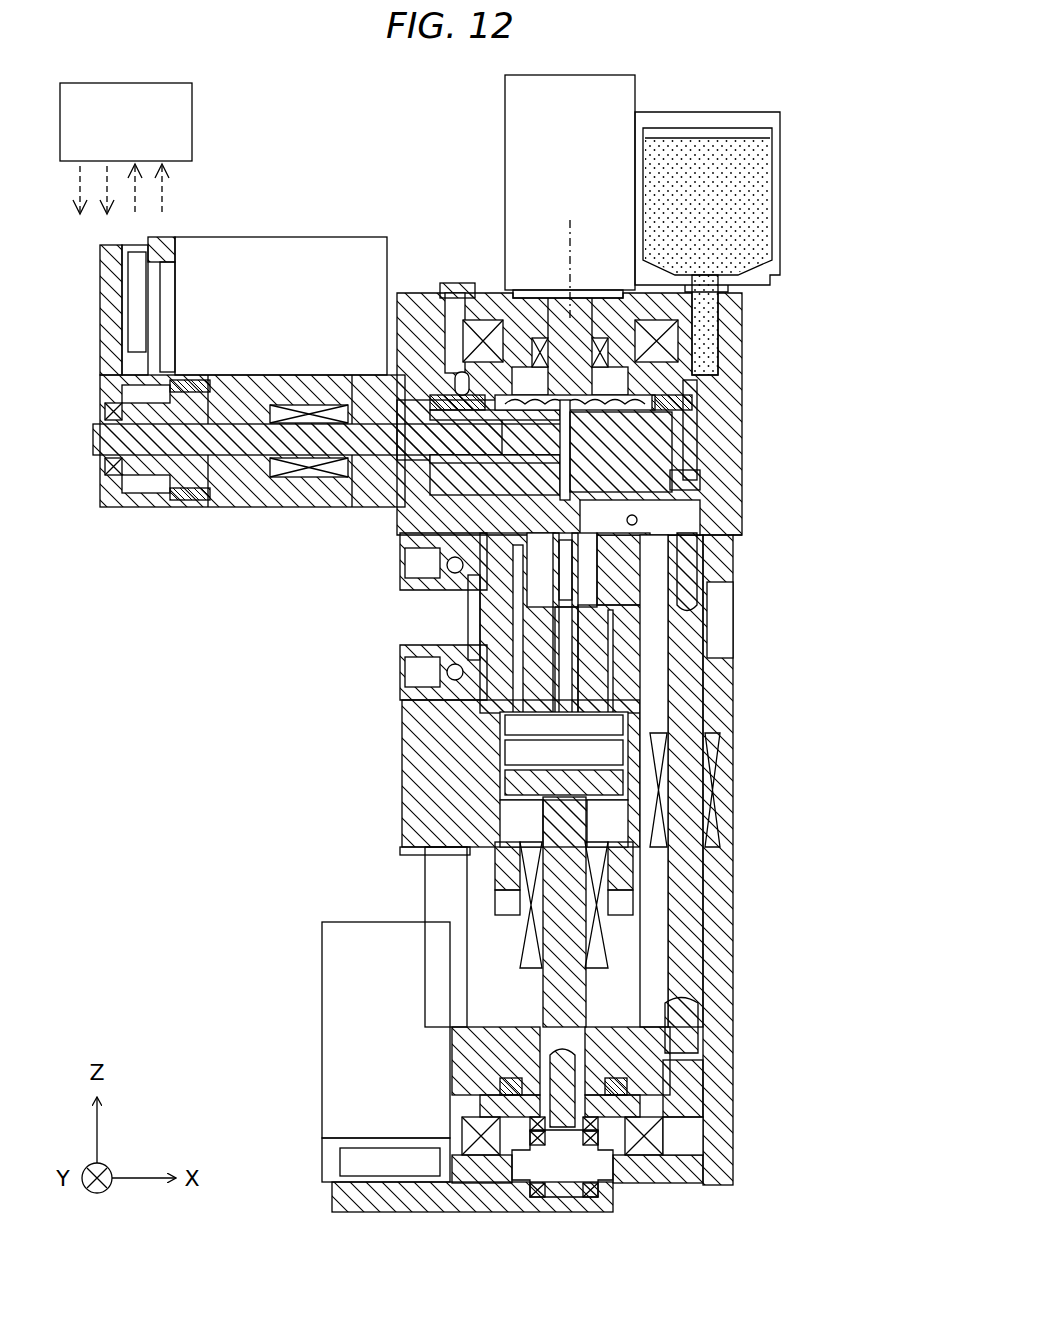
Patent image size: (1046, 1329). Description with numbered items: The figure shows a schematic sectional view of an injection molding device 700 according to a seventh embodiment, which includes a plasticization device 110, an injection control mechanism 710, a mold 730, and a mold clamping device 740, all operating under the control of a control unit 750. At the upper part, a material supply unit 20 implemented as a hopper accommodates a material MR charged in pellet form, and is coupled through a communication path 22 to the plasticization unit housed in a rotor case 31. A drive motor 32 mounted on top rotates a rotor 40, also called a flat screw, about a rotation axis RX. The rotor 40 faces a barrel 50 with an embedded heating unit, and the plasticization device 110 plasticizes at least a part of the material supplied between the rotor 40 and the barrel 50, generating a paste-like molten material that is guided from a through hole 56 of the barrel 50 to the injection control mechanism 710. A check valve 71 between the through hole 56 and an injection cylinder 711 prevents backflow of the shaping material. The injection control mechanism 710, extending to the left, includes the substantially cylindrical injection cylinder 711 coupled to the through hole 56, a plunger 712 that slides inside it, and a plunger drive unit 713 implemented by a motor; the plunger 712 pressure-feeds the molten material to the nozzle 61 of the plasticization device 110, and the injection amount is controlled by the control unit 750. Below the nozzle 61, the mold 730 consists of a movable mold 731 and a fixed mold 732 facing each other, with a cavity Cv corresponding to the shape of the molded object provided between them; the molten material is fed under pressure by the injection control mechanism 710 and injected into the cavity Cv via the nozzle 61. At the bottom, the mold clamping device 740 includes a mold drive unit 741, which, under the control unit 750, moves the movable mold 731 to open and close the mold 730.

The control unit 750 is at (193, 120).
The plunger drive unit 713 is at (279, 252).
The plunger 712 is at (242, 455).
The injection cylinder 711 is at (400, 498).
The injection control mechanism 710 is at (258, 593).
The fixed mold 732 is at (480, 590).
The movable mold 731 is at (480, 636).
The mold 730 is at (372, 616).
The injection molding device 700 is at (295, 775).
The mold clamping device 740 is at (337, 1001).
The mold drive unit 741 is at (322, 1020).
The drive motor 32 is at (505, 128).
The plasticization device 110 is at (445, 198).
The rotation axis RX is at (570, 275).
The rotor 40 is at (498, 365).
The material MR is at (742, 192).
The material supply unit 20 is at (782, 197).
The communication path 22 is at (733, 330).
The rotor case 31 is at (735, 368).
The barrel 50 is at (600, 440).
The check valve 71 is at (650, 428).
The through hole 56 is at (670, 482).
The nozzle 61 is at (665, 565).
The cavity Cv is at (600, 628).